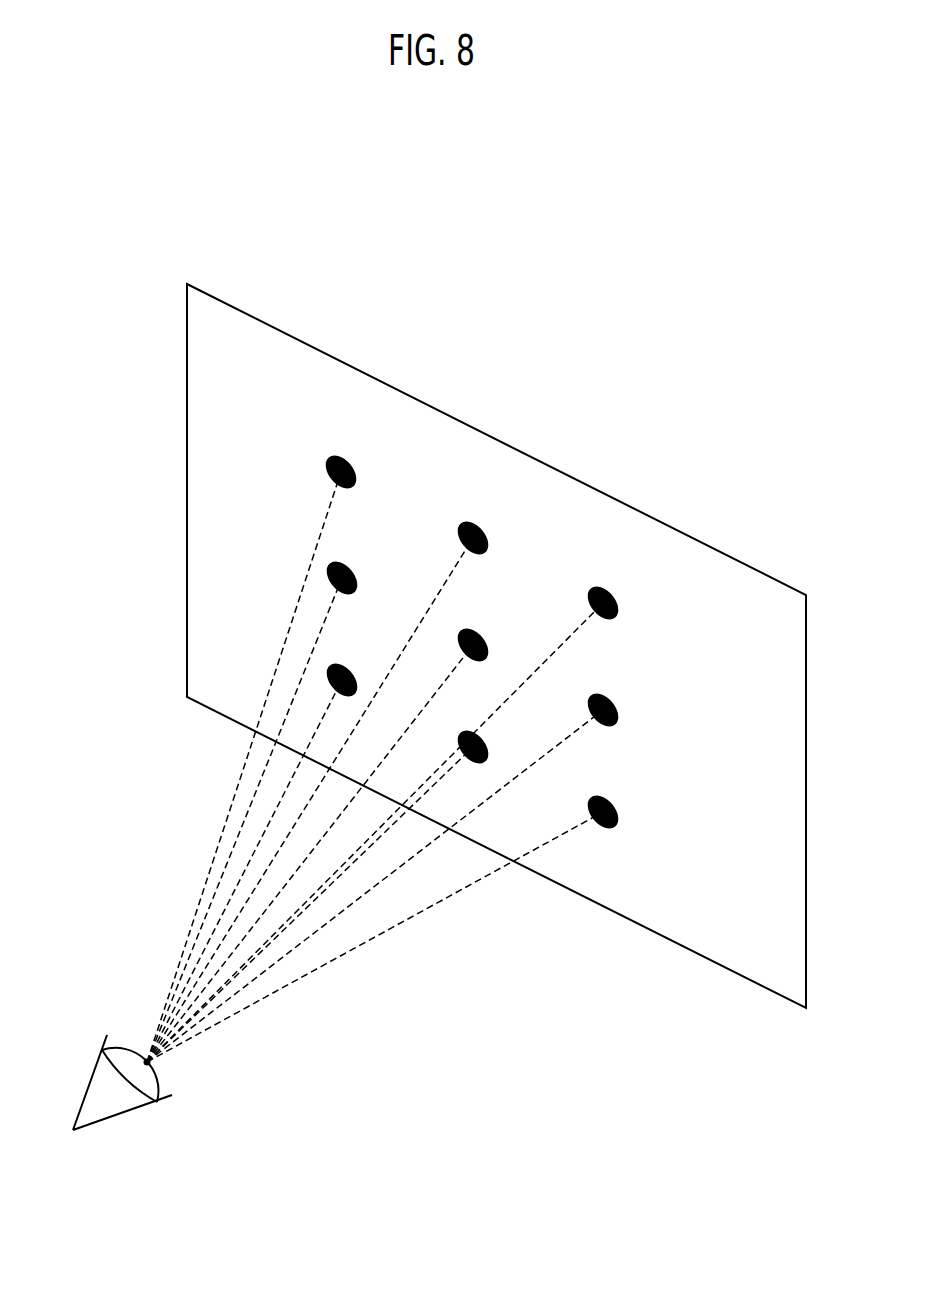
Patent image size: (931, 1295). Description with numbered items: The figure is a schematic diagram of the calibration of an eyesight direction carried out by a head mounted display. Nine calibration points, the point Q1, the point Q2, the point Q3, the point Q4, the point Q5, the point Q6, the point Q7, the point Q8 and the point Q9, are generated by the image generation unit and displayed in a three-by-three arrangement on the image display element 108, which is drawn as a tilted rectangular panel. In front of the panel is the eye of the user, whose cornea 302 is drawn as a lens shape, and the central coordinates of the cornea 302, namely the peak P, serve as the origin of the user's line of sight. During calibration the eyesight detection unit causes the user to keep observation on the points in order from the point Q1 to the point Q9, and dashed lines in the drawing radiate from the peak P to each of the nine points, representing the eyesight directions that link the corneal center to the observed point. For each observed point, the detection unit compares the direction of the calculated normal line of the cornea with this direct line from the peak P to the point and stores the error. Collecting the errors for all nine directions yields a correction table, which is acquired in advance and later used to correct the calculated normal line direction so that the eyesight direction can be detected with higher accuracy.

The image display element 108 is at (772, 578).
The cornea 302 is at (123, 1057).
The peak P is at (161, 1076).
The point Q1 is at (352, 464).
The point Q2 is at (484, 530).
The point Q3 is at (614, 605).
The point Q4 is at (353, 571).
The point Q5 is at (484, 641).
The point Q6 is at (614, 712).
The point Q7 is at (353, 673).
The point Q8 is at (484, 739).
The point Q9 is at (614, 812).